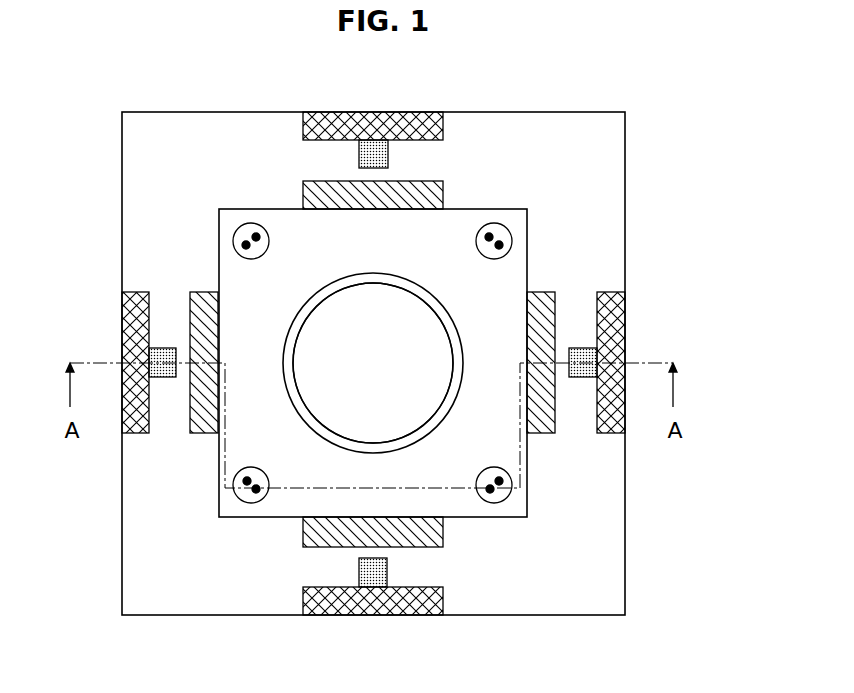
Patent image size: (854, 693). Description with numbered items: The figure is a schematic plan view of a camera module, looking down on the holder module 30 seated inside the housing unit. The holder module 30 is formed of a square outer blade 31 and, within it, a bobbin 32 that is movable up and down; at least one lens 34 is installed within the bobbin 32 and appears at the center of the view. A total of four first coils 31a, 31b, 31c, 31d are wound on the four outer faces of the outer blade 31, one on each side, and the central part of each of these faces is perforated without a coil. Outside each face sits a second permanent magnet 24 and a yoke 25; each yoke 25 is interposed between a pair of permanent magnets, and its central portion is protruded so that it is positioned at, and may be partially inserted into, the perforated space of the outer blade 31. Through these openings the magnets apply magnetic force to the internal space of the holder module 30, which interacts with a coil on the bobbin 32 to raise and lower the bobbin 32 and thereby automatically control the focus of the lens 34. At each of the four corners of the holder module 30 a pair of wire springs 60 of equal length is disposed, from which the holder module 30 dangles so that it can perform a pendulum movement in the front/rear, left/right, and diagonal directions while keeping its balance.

The holder module 30 is at (665, 82).
The outer blade 31 is at (527, 258).
The first coil 31a is at (192, 423).
The first coil 31b is at (308, 530).
The first coil 31c is at (540, 415).
The first coil 31d is at (424, 186).
The bobbin 32 is at (427, 293).
The lens 34 is at (323, 342).
The second permanent magnet 24 is at (128, 300).
The yoke 25 is at (588, 352).
The wire spring 60 is at (489, 493).